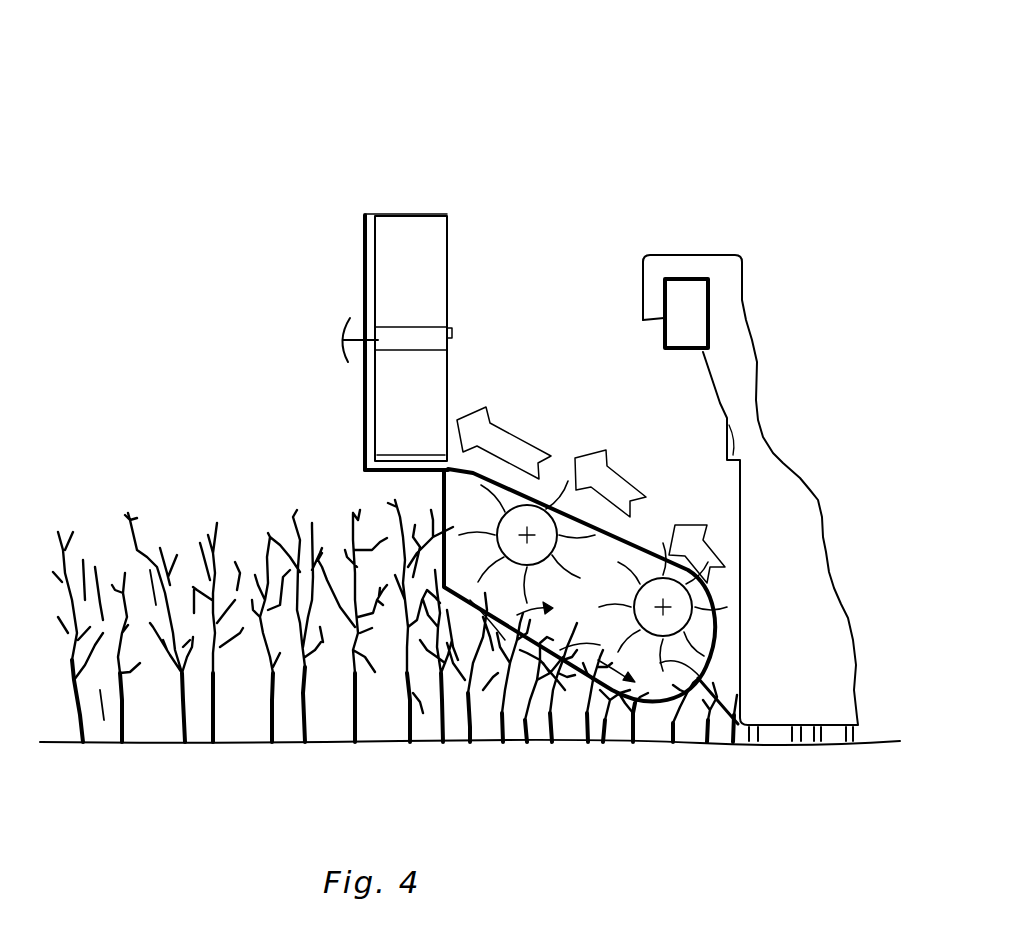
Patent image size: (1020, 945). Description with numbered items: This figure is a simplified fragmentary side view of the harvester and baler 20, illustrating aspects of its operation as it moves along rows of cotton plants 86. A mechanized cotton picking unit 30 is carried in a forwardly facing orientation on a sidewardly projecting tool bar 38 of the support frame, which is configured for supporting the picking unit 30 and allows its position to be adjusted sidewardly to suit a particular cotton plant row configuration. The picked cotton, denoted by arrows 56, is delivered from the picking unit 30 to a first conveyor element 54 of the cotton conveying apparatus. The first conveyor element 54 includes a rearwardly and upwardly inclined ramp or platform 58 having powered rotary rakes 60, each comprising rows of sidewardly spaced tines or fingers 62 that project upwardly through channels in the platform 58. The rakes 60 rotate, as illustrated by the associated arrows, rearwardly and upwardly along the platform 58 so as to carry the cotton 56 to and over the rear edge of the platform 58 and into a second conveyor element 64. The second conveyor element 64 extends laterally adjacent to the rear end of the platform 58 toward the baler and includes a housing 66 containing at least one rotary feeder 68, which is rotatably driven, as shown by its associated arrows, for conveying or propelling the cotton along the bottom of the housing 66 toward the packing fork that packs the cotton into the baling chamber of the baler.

The harvester and baler 20 is at (657, 97).
The mechanized cotton picking unit 30 is at (748, 333).
The tool bar 38 is at (663, 336).
The first conveyor element 54 is at (637, 537).
The picked cotton 56 is at (455, 437).
The ramp or platform 58 is at (545, 488).
The powered rotary rake 60 is at (527, 504).
The tines or fingers 62 is at (661, 520).
The second conveyor element 64 is at (462, 178).
The housing 66 is at (365, 238).
The rotary feeder 68 is at (448, 258).
The plants 86 is at (95, 510).